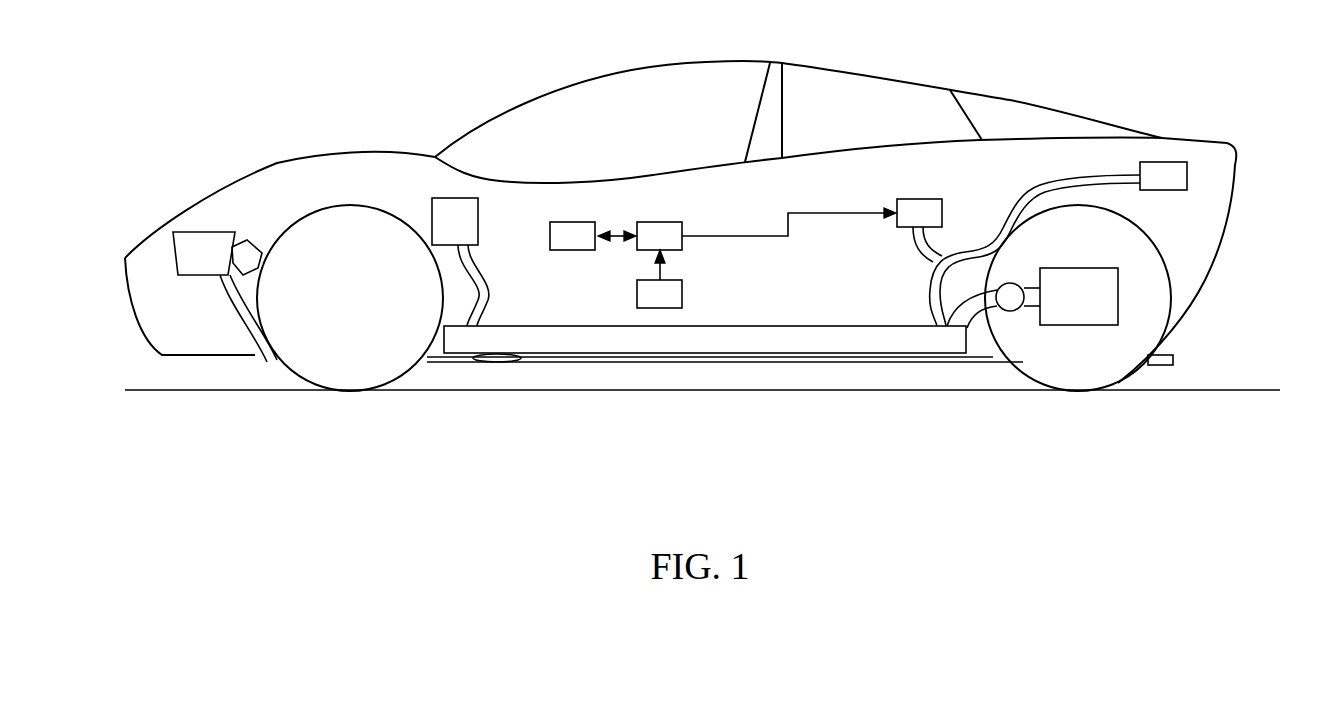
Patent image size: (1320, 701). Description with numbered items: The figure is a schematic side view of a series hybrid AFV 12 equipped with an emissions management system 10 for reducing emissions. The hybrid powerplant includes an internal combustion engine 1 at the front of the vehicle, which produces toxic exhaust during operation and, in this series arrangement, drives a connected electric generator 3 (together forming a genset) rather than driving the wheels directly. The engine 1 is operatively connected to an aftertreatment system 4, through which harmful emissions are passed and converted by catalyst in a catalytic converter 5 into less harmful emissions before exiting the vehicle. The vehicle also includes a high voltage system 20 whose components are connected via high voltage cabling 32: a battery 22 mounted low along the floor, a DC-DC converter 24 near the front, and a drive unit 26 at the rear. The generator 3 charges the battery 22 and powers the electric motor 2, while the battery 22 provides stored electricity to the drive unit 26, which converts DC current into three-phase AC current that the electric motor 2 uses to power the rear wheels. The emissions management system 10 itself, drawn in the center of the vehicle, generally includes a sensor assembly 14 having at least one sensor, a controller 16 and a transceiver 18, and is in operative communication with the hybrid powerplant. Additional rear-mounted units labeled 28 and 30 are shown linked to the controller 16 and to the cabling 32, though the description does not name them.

The emissions management system 10 is at (638, 201).
The series hybrid AFV 12 is at (1017, 96).
The sensor assembly 14 is at (683, 295).
The controller 16 is at (683, 245).
The transceiver 18 is at (572, 250).
The high voltage system 20 is at (737, 374).
The battery 22 is at (865, 357).
The DC-DC converter 24 is at (450, 198).
The drive unit 26 is at (1007, 311).
The rear unit 28 is at (1162, 162).
The inverter 30 is at (895, 201).
The high voltage cabling 32 is at (487, 285).
The internal combustion engine 1 is at (188, 275).
The electric motor 2 is at (1077, 325).
The electric generator 3 is at (262, 257).
The aftertreatment system 4 is at (273, 362).
The catalytic converter 5 is at (495, 363).